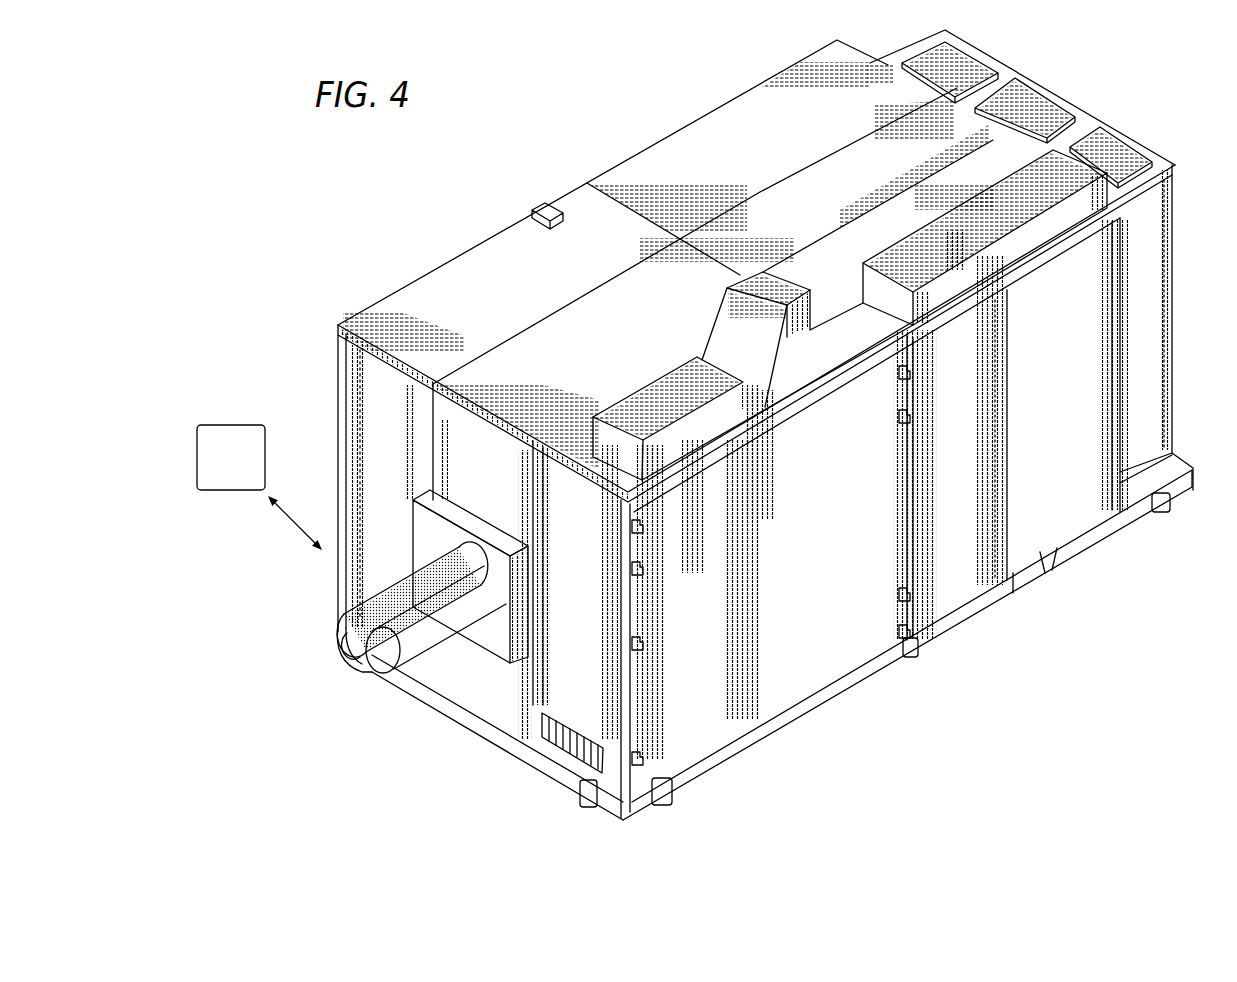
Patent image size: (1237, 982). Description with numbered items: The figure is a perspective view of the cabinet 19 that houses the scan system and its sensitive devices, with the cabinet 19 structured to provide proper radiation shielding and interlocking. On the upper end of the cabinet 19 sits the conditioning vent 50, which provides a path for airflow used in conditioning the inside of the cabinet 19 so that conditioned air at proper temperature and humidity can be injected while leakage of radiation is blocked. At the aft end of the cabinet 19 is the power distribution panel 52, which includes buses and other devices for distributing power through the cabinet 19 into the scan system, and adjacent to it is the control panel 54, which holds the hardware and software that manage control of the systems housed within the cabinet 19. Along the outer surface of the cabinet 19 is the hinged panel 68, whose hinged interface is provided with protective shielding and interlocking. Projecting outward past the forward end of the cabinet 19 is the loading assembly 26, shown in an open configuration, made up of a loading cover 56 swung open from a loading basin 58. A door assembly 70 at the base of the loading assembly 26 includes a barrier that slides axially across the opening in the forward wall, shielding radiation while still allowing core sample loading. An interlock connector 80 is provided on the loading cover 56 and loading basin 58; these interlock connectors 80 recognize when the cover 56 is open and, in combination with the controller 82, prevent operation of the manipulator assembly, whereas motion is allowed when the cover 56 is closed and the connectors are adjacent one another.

The cabinet 19 is at (1070, 538).
The loading assembly 26 is at (360, 593).
The conditioning vent 50 is at (662, 364).
The power distribution panel 52 is at (1168, 114).
The control panel 54 is at (1013, 50).
The loading cover 56 is at (462, 640).
The loading basin 58 is at (340, 658).
The hinged panel 68 is at (866, 628).
The door assembly 70 is at (430, 554).
The interlock connector 80 is at (407, 670).
The controller 82 is at (247, 424).